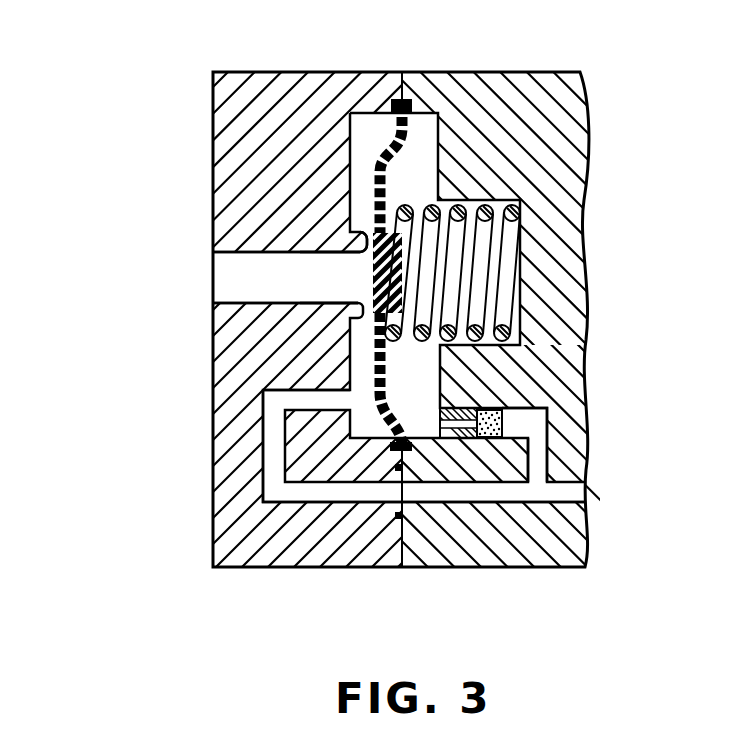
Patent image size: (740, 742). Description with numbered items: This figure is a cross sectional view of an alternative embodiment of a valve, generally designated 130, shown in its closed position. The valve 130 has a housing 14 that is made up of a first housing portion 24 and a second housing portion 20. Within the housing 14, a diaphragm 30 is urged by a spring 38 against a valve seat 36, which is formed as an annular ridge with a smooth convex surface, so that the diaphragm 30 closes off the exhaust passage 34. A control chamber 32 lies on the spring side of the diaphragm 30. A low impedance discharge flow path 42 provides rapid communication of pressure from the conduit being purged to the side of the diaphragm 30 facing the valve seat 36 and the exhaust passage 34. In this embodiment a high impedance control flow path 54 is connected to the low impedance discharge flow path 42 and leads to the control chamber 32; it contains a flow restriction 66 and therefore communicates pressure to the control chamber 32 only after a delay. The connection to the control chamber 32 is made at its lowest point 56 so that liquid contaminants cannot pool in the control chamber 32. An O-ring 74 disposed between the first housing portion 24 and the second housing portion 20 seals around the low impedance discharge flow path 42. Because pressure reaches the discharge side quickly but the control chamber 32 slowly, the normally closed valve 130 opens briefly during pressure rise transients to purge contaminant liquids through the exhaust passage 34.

The valve 130 is at (180, 108).
The second housing portion 20 is at (270, 93).
The first housing portion 24 is at (510, 95).
The housing 14 is at (465, 72).
The control chamber 32 is at (400, 364).
The spring 38 is at (487, 228).
The valve seat 36 is at (353, 240).
The exhaust passage 34 is at (238, 266).
The diaphragm 30 is at (368, 272).
The low impedance discharge flow path 42 is at (582, 492).
The high impedance control flow path 54 is at (538, 444).
The lowest point 56 is at (422, 433).
The flow restriction 66 is at (458, 437).
The O-ring 74 is at (397, 515).